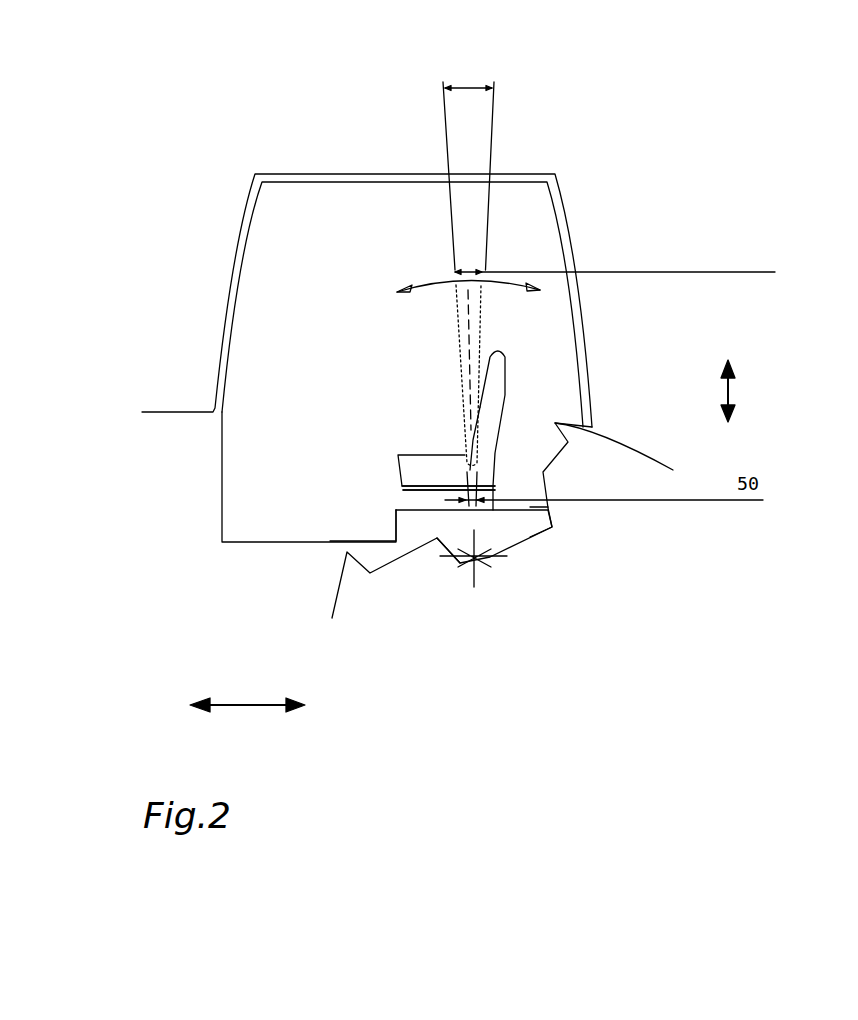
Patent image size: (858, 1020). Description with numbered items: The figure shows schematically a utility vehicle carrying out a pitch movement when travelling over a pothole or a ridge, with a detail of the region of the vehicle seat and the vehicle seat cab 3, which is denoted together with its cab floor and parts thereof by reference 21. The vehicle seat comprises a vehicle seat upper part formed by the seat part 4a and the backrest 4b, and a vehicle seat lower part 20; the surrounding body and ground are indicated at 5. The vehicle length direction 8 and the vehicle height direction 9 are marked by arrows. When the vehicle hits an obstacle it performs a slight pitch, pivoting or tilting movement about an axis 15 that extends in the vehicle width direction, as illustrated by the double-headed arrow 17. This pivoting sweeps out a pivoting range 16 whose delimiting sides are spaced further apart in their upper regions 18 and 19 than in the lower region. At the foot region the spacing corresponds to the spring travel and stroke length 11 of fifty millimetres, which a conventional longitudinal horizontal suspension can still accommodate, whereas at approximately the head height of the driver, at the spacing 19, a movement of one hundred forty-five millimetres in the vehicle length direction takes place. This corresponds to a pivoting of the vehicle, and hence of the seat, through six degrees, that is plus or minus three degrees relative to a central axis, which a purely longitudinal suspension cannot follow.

The vehicle seat cab 3 is at (563, 214).
The seat part 4a is at (428, 464).
The backrest 4b is at (500, 388).
The workpiece 5 is at (622, 473).
The vehicle length direction 8 is at (248, 706).
The vehicle height direction 9 is at (730, 384).
The spring travel and stroke length 11 is at (455, 557).
The axis 15 is at (476, 560).
The pivoting range 16 is at (473, 317).
The double-headed arrow 17 is at (494, 282).
The upper region 18 is at (473, 90).
The upper region 19 is at (467, 268).
The vehicle seat lower part 20 is at (405, 502).
The vehicle seat cab with cab floor 21 is at (412, 524).